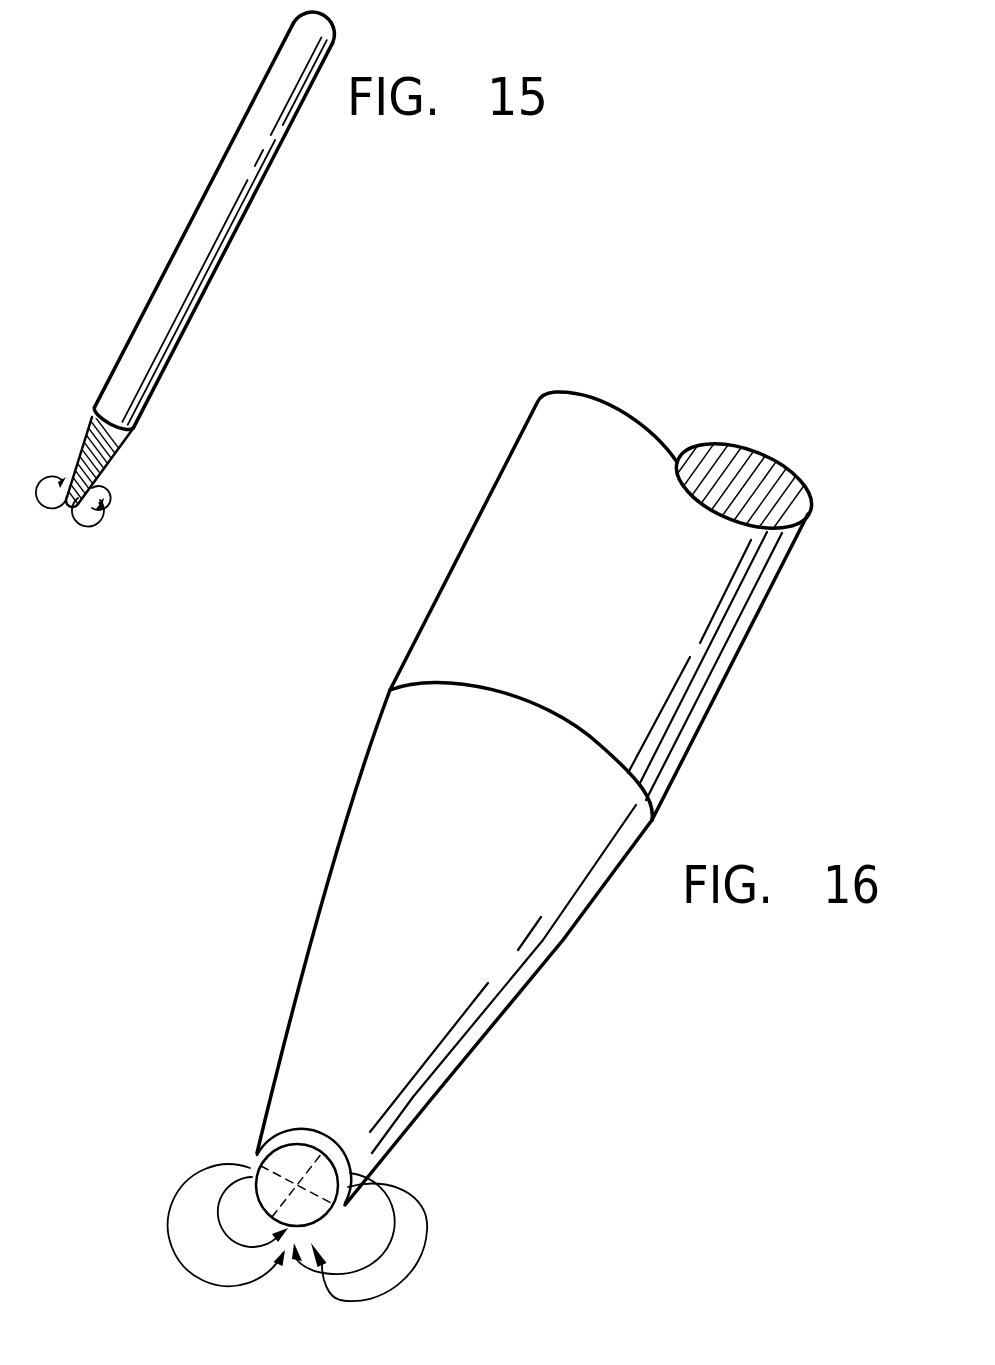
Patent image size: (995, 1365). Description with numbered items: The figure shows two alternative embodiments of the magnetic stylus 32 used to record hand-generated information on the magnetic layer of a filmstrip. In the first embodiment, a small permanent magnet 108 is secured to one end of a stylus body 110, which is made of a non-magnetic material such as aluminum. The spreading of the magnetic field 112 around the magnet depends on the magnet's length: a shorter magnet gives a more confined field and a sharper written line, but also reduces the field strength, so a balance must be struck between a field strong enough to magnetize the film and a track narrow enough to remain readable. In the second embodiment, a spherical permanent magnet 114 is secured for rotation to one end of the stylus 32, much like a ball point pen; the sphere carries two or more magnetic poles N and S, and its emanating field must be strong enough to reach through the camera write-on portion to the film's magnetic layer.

In FIG. 15, the magnetic stylus 32 is at (170, 261).
In FIG. 16, the magnetic stylus 32 is at (763, 713).
In FIG. 15, the stylus body 110 is at (222, 170).
In FIG. 15, the permanent magnet 108 is at (82, 443).
In FIG. 15, the magnetic field 112 is at (50, 547).
In FIG. 16, the spherical permanent magnet 114 is at (283, 1155).